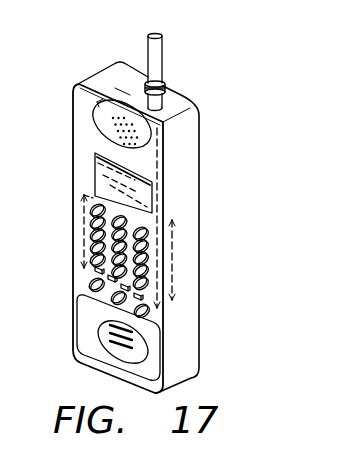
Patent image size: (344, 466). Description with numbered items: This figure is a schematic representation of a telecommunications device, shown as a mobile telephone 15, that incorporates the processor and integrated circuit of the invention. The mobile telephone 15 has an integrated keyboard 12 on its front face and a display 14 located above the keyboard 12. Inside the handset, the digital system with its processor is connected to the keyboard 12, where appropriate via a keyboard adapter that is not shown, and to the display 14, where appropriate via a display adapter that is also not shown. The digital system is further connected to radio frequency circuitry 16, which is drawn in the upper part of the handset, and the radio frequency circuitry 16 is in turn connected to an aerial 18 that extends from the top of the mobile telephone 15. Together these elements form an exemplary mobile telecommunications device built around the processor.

The keyboard 12 is at (96, 237).
The display 14 is at (100, 178).
The mobile telephone 15 is at (192, 320).
The radio frequency circuitry 16 is at (98, 142).
The aerial 18 is at (161, 55).